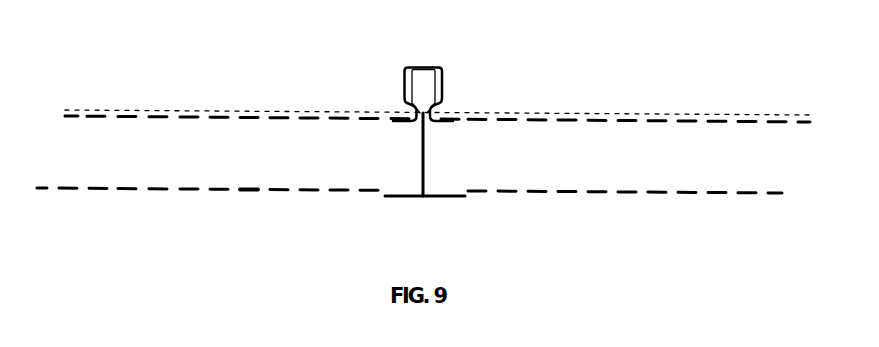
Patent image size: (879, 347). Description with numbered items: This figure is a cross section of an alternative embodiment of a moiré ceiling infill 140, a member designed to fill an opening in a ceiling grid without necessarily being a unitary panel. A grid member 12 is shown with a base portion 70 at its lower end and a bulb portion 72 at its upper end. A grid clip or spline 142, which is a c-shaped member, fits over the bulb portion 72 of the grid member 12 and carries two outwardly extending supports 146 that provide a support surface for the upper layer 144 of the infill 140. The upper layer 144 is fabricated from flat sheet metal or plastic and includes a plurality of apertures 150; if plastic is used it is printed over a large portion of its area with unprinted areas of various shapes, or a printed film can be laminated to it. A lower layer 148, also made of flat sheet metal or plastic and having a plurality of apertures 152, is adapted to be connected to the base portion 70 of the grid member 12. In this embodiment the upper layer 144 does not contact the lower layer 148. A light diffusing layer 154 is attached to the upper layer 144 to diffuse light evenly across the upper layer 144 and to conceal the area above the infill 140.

The grid member 12 is at (427, 174).
The base portion 70 is at (403, 198).
The bulb portion 72 is at (438, 88).
The moiré ceiling infill 140 is at (139, 244).
The grid clip or spline 142 is at (436, 69).
The upper layer 144 is at (248, 119).
The outwardly extending supports 146 is at (400, 124).
The lower layer 148 is at (247, 193).
The apertures 150 is at (174, 121).
The apertures 152 is at (85, 192).
The light diffusing layer 154 is at (100, 111).